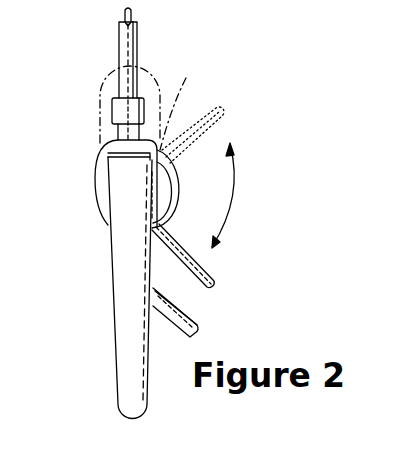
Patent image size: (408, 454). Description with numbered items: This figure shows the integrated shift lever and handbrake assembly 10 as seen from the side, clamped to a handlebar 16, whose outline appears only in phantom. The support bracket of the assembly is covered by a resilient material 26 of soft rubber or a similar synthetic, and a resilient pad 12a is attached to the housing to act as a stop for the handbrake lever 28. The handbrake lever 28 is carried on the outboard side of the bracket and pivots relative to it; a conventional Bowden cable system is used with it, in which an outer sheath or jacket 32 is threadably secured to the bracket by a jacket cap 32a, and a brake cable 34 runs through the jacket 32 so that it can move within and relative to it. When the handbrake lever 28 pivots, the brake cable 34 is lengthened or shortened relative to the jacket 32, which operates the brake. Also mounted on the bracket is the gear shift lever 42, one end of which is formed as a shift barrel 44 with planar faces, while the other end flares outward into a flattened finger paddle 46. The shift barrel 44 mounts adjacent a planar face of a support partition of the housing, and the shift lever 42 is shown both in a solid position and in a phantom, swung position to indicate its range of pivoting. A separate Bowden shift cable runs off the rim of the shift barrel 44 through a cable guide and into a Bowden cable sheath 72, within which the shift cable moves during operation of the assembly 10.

The integrated shift lever and handbrake assembly 10 is at (100, 233).
The resilient pad 12a is at (121, 155).
The handlebar 16 is at (157, 101).
The resilient material 26 is at (101, 171).
The handbrake lever 28 is at (127, 362).
The outer sheath or jacket 32 is at (121, 42).
The jacket cap 32a is at (114, 110).
The brake cable 34 is at (133, 13).
The gear shift lever 42 is at (170, 227).
The shift barrel 44 is at (173, 188).
The finger paddle 46 is at (224, 114).
The Bowden cable sheath 72 is at (200, 324).